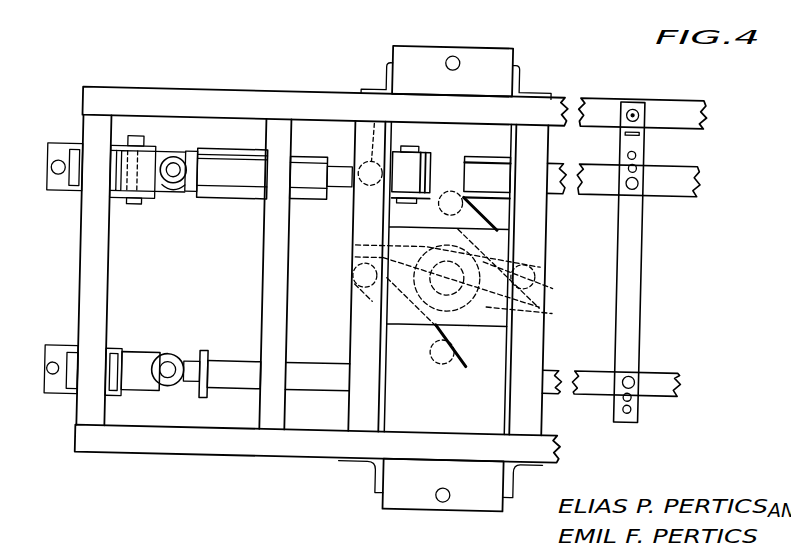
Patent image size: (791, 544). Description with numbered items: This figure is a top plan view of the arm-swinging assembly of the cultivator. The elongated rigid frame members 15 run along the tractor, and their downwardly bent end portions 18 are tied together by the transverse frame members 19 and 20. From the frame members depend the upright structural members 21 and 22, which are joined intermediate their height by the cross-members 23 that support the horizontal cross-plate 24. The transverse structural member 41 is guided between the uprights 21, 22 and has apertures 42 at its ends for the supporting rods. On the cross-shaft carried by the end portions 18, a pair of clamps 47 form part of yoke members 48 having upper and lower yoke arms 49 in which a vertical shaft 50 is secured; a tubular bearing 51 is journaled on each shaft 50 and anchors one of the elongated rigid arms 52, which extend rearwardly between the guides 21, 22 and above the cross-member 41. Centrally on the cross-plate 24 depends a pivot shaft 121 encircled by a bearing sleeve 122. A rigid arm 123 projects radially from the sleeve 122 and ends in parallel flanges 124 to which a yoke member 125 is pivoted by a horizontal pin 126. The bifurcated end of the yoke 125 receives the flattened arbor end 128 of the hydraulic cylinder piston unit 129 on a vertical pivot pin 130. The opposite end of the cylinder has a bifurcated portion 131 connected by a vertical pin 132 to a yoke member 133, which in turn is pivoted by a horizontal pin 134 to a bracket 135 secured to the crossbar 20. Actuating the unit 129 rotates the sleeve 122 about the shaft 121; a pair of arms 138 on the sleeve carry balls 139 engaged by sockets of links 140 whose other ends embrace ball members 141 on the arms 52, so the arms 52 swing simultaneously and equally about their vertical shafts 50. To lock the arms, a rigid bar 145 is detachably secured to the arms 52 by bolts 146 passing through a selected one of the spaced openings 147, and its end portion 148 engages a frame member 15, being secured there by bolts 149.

The frame member 15 is at (627, 276).
The downwardly bent end portion 18 is at (321, 275).
The transverse frame member 19 is at (258, 273).
The transverse frame member 20 is at (108, 270).
The upright structural member 21 is at (361, 273).
The upright structural member 22 is at (531, 277).
The cross-member 23 is at (443, 278).
The cross-plate 24 is at (520, 333).
The transverse structural member 41 is at (439, 290).
The aperture 42 is at (450, 278).
The clamp 47 is at (57, 282).
The yoke member 48 is at (119, 352).
The yoke arm 49 is at (141, 357).
The vertical shaft 50 is at (170, 351).
The tubular bearing 51 is at (260, 385).
The elongated rigid arm 52 is at (621, 268).
The pivot shaft 121 is at (488, 279).
The bearing sleeve 122 is at (501, 279).
The rigid arm 123 is at (489, 160).
The flange 124 is at (440, 157).
The yoke member 125 is at (368, 210).
The horizontal bolt or pin 126 is at (415, 147).
The flattened end portion of arbor 128 is at (337, 155).
The hydraulic cylinder piston unit 129 is at (262, 184).
The pivot pin or bolt 130 is at (364, 140).
The bifurcated portion 131 is at (206, 152).
The bolt or pin 132 is at (170, 189).
The yoke member 133 is at (168, 147).
The bolt or pin 134 is at (135, 183).
The bracket or support 135 is at (97, 154).
The arm 138 is at (451, 277).
The ball 139 is at (450, 278).
The link 140 is at (452, 281).
The ball member 141 is at (470, 284).
The cross-shaft or bar 145 is at (655, 263).
The bolt 146 is at (657, 283).
The opening 147 is at (663, 282).
The end portion 148 is at (629, 96).
The bolt or detachable securing means 149 is at (658, 107).